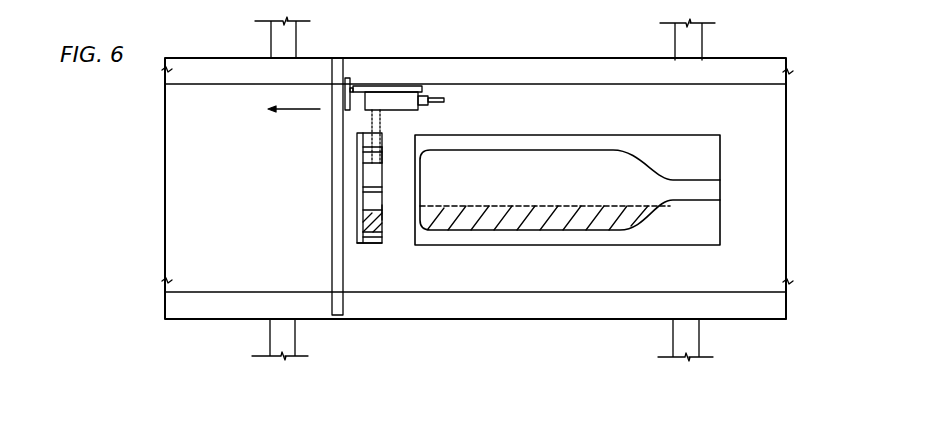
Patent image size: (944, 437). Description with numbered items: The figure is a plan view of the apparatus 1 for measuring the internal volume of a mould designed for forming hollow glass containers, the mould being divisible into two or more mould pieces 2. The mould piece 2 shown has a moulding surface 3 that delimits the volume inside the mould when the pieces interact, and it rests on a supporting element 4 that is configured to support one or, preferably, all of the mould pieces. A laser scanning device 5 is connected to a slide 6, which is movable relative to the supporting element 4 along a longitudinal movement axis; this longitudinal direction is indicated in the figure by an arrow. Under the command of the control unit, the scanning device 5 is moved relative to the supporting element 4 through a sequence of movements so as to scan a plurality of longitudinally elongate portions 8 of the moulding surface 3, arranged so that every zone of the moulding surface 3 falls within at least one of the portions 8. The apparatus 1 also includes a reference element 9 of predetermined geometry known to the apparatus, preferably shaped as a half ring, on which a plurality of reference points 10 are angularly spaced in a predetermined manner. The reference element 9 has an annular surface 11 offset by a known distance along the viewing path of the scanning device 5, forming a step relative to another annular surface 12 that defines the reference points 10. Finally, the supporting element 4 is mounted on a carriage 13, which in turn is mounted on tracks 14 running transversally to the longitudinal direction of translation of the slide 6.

The apparatus 1 is at (813, 95).
The mould piece 2 is at (663, 150).
The moulding surface 3 is at (480, 163).
The supporting element 4 is at (630, 272).
The laser scanning device 5 is at (407, 98).
The slide 6 is at (337, 316).
The portions 8 is at (537, 223).
The reference element 9 is at (368, 244).
The reference points 10 is at (380, 160).
The surface 11 is at (363, 168).
The annular surface 12 is at (374, 238).
The carriage 13 is at (735, 303).
The tracks 14 is at (277, 43).